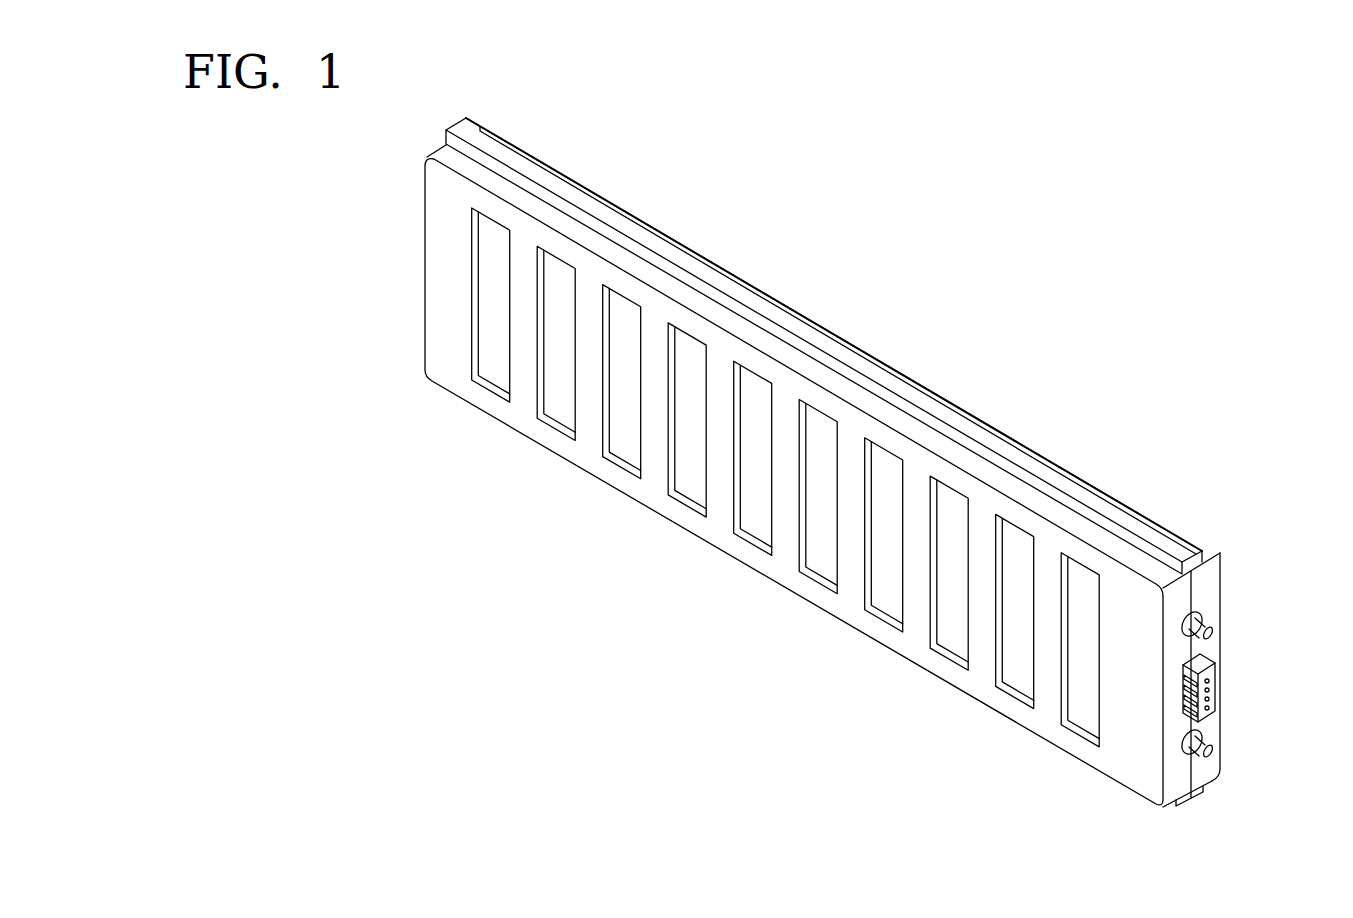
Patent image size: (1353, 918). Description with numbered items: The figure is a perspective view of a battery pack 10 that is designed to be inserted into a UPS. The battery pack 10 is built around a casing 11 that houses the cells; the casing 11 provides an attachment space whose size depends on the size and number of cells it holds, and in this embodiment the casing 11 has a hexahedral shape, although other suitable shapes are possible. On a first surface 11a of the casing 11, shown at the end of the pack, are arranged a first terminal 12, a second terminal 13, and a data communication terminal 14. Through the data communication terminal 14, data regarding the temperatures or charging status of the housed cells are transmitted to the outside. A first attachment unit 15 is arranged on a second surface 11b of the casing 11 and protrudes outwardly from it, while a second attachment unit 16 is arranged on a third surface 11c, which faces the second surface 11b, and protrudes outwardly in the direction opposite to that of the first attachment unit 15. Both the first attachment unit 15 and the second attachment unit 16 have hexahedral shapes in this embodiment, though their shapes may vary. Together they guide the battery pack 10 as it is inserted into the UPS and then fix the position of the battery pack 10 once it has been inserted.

The battery pack 10 is at (1197, 354).
The casing 11 is at (404, 284).
The first surface 11a is at (1213, 590).
The second surface 11b is at (1207, 548).
The third surface 11c is at (1213, 780).
The first terminal 12 is at (1215, 633).
The second terminal 13 is at (1216, 751).
The data communication terminal 14 is at (1216, 687).
The first attachment unit 15 is at (1153, 527).
The second attachment unit 16 is at (1191, 800).